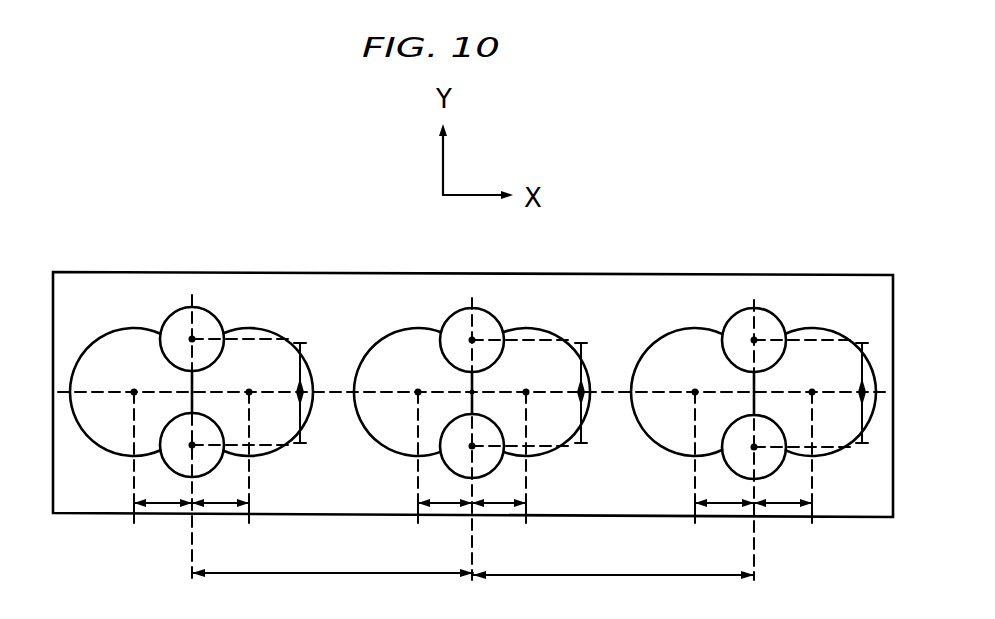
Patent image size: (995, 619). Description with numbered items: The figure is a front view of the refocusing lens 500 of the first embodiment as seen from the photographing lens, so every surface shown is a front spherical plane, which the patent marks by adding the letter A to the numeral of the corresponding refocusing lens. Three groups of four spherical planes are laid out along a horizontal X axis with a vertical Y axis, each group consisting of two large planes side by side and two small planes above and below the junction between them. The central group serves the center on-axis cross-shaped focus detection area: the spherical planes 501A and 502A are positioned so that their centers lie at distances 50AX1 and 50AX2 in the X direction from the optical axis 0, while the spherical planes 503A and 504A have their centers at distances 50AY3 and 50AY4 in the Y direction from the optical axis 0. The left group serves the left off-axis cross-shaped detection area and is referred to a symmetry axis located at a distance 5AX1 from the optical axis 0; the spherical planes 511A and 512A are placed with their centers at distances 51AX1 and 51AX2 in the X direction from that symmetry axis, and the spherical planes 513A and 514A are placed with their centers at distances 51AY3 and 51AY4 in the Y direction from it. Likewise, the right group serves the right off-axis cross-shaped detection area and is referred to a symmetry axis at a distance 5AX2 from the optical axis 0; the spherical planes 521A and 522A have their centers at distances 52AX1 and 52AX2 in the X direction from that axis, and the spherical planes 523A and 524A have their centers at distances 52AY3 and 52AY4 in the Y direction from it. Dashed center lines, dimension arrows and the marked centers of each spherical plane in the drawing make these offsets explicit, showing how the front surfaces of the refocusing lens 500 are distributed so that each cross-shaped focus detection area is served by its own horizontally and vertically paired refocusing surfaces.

The refocusing lens 500 is at (850, 522).
The refocusing lens spherical plane 511A is at (95, 338).
The refocusing lens spherical plane 512A is at (278, 452).
The refocusing lens spherical plane 513A is at (214, 320).
The refocusing lens spherical plane 514A is at (222, 462).
The distance 51AY3 is at (297, 373).
The distance 51AY4 is at (297, 416).
The distance 51AX1 is at (163, 504).
The distance 51AX2 is at (220, 504).
The refocusing lens spherical plane 501A is at (375, 342).
The refocusing lens spherical plane 502A is at (553, 452).
The refocusing lens spherical plane 503A is at (497, 321).
The refocusing lens spherical plane 504A is at (500, 466).
The optical axis 0 is at (471, 395).
The distance 50AY3 is at (578, 373).
The distance 50AY4 is at (578, 416).
The distance 50AX1 is at (445, 504).
The distance 50AX2 is at (499, 504).
The refocusing lens spherical plane 521A is at (656, 343).
The refocusing lens spherical plane 522A is at (824, 453).
The refocusing lens spherical plane 523A is at (779, 321).
The refocusing lens spherical plane 524A is at (782, 467).
The distance 52AY3 is at (859, 373).
The distance 52AY4 is at (859, 416).
The distance 52AX1 is at (722, 504).
The distance 52AX2 is at (786, 504).
The distance 5AX1 is at (332, 563).
The distance 5AX2 is at (613, 565).